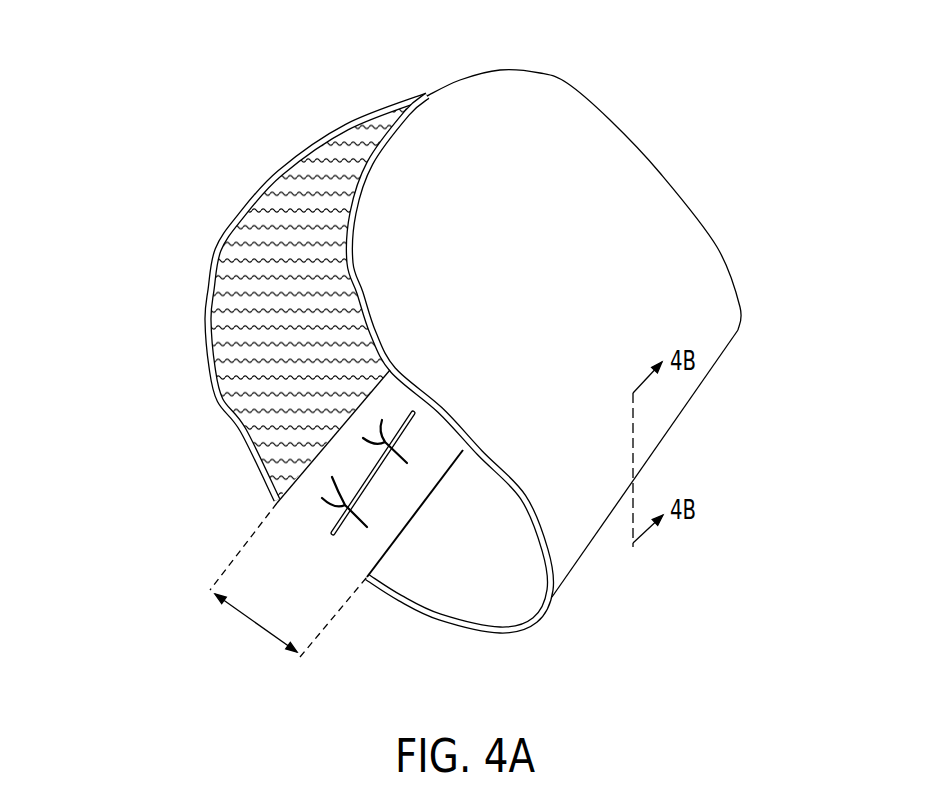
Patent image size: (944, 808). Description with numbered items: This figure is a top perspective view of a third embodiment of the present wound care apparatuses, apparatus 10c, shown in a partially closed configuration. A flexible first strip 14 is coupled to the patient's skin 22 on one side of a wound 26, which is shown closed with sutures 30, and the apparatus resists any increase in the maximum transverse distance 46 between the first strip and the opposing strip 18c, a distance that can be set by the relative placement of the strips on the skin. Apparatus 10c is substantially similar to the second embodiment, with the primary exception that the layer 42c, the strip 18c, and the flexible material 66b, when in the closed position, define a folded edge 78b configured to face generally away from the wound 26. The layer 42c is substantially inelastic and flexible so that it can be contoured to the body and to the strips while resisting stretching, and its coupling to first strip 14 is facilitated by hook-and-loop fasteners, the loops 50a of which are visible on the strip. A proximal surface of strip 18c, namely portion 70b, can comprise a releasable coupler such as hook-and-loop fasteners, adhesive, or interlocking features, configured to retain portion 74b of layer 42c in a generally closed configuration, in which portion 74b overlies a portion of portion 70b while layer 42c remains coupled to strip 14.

The wound care apparatus 10c is at (290, 108).
The portion of layer 74b is at (560, 107).
The layer 42c is at (657, 190).
The flexible material 66b is at (733, 215).
The folded edge 78b is at (727, 380).
The loops 50a is at (240, 223).
The patient's skin 22 is at (173, 332).
The first strip 14 is at (240, 407).
The sutures 30 is at (358, 515).
The wound 26 is at (343, 540).
The maximum transverse distance 46 is at (260, 628).
The portion of strip 70b is at (440, 587).
The strip 18c is at (475, 602).